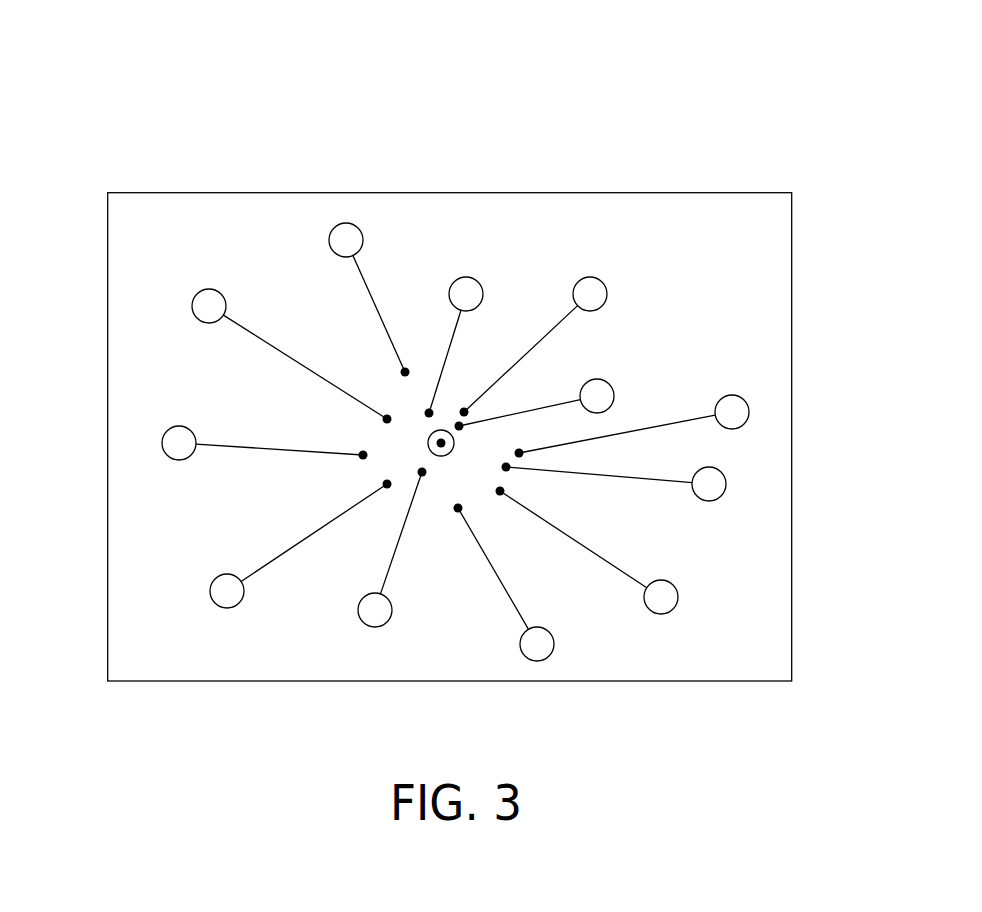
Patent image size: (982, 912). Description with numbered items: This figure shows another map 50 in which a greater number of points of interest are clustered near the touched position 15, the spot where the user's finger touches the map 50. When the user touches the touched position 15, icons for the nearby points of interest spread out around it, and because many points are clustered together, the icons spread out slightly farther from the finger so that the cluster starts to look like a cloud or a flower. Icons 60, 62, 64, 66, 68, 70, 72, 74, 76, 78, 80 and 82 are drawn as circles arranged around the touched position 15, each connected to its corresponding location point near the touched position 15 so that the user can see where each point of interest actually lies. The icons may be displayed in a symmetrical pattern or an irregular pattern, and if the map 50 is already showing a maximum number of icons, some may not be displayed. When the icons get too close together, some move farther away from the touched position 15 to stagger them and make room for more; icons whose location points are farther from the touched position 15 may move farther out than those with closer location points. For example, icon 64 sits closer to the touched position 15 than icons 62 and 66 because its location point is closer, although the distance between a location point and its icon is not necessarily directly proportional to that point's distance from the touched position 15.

The map 50 is at (842, 95).
The touched position 15 is at (437, 455).
The icon 60 is at (462, 278).
The icon 62 is at (601, 282).
The icon 64 is at (612, 389).
The icon 66 is at (749, 409).
The icon 68 is at (726, 481).
The icon 70 is at (673, 609).
The icon 72 is at (543, 661).
The icon 74 is at (368, 627).
The icon 76 is at (222, 609).
The icon 78 is at (165, 431).
The icon 80 is at (207, 289).
The electrode 82 is at (345, 223).